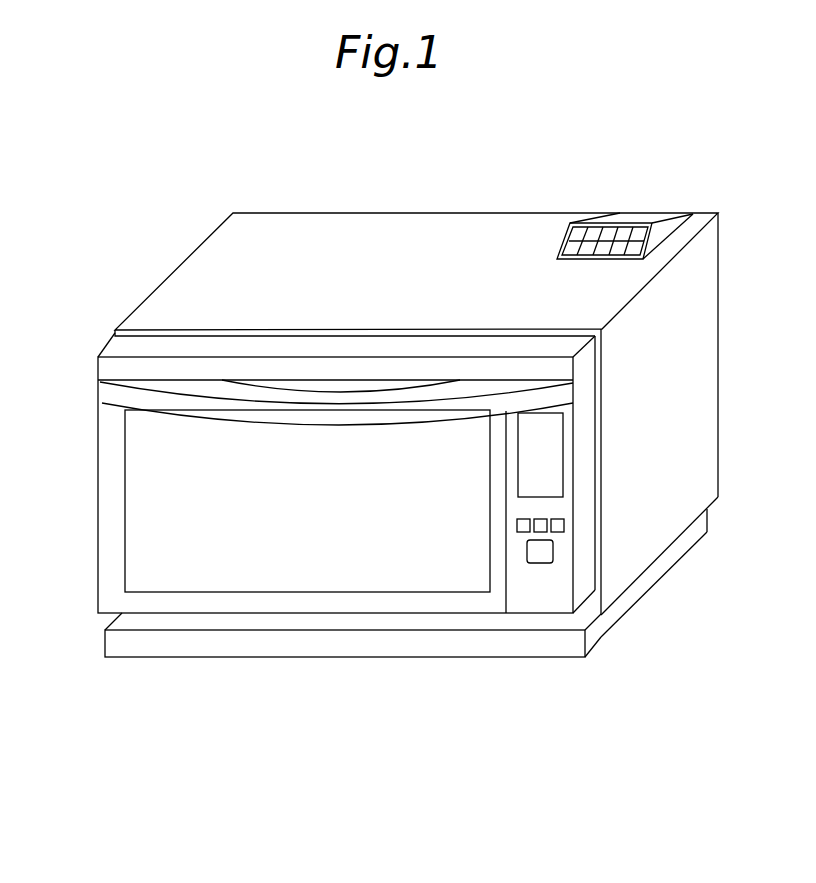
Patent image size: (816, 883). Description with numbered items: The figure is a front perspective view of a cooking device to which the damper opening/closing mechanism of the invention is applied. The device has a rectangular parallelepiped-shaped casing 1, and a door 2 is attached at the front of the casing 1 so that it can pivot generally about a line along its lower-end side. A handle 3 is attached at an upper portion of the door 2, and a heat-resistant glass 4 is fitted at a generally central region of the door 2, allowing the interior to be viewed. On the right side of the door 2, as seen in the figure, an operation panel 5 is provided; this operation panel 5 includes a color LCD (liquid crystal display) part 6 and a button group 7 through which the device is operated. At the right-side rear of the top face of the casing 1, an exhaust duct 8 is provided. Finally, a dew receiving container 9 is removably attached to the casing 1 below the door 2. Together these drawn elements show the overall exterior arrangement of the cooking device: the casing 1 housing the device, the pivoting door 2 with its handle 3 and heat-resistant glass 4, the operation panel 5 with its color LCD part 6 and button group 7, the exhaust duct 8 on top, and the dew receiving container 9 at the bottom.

The casing 1 is at (433, 213).
The door 2 is at (113, 481).
The handle 3 is at (240, 421).
The heat-resistant glass 4 is at (137, 527).
The operation panel 5 is at (572, 500).
The color LCD part 6 is at (540, 463).
The button group 7 is at (580, 513).
The exhaust duct 8 is at (620, 213).
The dew receiving container 9 is at (545, 659).